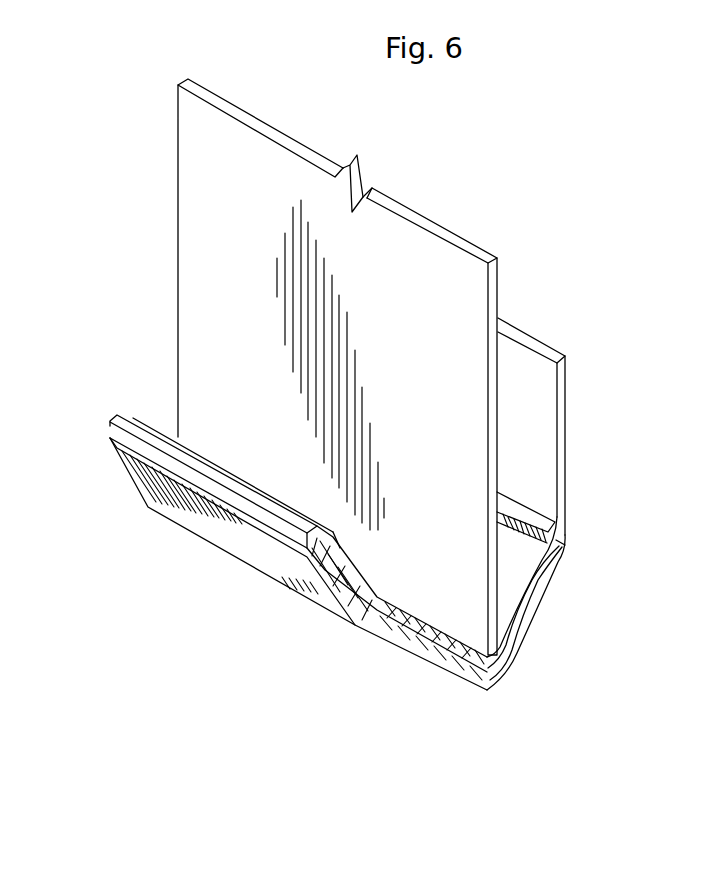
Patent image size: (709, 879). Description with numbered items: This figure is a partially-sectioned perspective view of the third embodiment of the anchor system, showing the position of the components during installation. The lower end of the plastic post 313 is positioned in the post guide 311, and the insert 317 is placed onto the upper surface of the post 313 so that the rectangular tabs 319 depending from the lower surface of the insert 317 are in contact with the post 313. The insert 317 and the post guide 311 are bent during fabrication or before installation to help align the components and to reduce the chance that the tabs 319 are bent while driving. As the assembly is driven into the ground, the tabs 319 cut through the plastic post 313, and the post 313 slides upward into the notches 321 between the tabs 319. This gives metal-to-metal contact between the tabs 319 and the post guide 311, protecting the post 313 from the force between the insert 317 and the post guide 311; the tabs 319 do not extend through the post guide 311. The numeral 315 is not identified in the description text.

The post guide 311 is at (557, 562).
The plastic post 313 is at (566, 484).
The front plate 315 is at (500, 288).
The insert 317 is at (522, 612).
The tabs 319 is at (493, 667).
The notches 321 is at (407, 640).